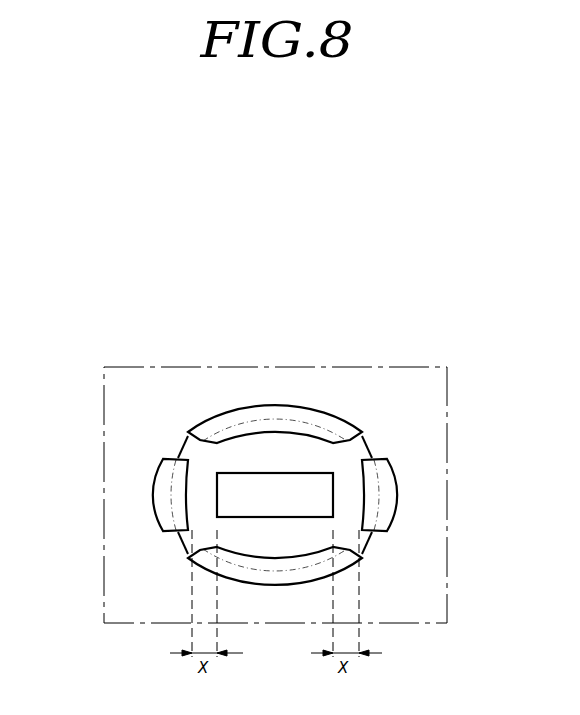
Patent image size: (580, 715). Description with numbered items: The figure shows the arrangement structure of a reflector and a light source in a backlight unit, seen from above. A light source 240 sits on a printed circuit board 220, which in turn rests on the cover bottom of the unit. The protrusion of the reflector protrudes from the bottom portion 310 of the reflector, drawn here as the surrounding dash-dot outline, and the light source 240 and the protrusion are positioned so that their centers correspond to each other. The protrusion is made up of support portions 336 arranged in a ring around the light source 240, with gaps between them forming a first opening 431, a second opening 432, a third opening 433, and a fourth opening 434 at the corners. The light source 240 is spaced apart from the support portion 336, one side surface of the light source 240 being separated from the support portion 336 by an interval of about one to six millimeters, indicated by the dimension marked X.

The printed circuit board 220 is at (253, 457).
The light source 240 is at (297, 483).
The bottom portion 310 is at (427, 418).
The support portion 336 is at (272, 420).
The first opening 431 is at (188, 550).
The second opening 432 is at (360, 448).
The third opening 433 is at (363, 550).
The fourth opening 434 is at (190, 448).